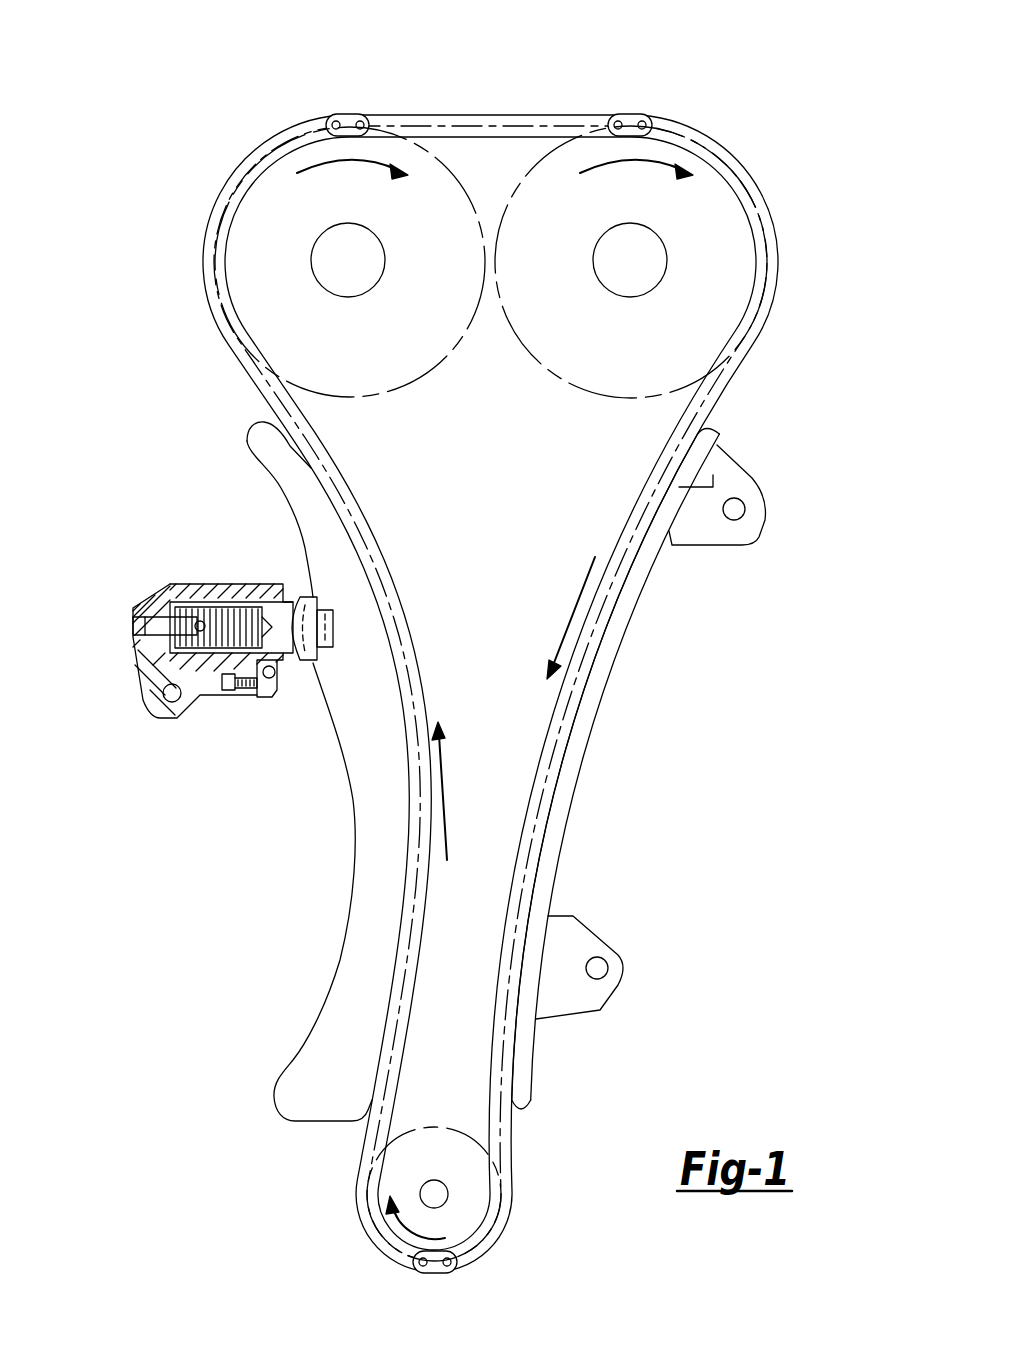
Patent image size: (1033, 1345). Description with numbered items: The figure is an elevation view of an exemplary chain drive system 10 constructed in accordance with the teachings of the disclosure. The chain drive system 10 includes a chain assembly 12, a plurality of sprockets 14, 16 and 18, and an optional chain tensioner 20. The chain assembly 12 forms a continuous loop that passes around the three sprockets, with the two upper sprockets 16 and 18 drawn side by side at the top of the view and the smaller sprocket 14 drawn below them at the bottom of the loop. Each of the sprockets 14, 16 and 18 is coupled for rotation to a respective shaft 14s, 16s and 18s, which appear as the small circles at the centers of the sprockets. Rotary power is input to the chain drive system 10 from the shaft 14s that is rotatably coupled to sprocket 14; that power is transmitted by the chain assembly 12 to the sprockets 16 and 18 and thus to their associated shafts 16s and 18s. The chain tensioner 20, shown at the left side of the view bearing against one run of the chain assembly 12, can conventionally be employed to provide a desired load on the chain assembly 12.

The chain drive system 10 is at (655, 77).
The chain assembly 12 is at (556, 795).
The sprocket 14 is at (468, 1168).
The shaft 14s is at (440, 1195).
The sprocket 16 is at (404, 373).
The shaft 16s is at (345, 283).
The sprocket 18 is at (602, 363).
The shaft 18s is at (606, 270).
The chain tensioner 20 is at (188, 561).